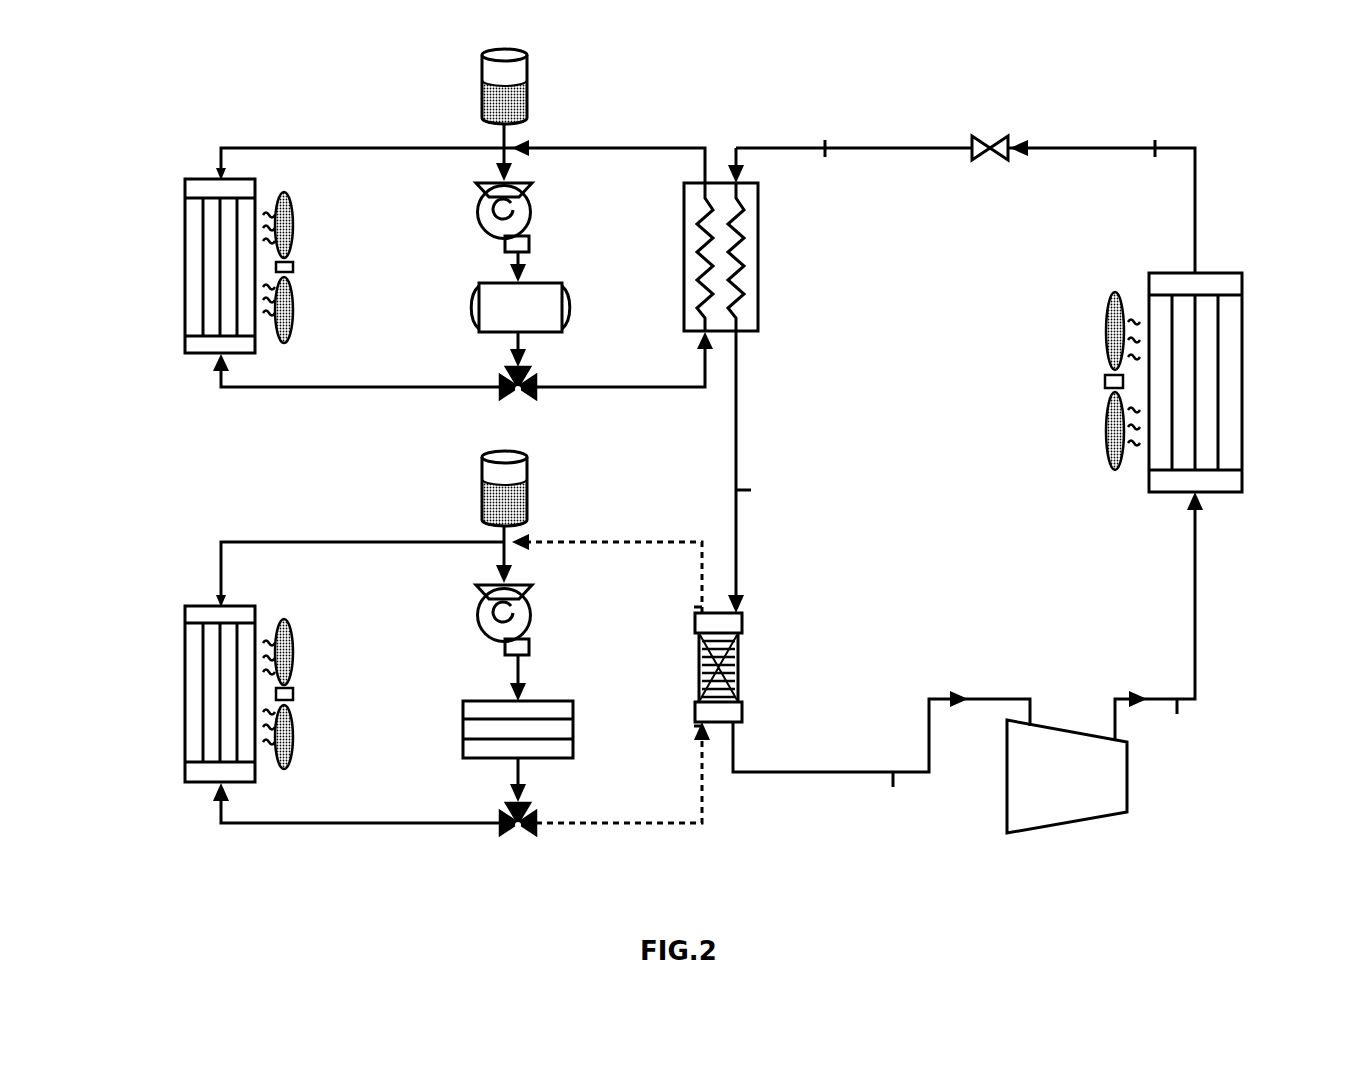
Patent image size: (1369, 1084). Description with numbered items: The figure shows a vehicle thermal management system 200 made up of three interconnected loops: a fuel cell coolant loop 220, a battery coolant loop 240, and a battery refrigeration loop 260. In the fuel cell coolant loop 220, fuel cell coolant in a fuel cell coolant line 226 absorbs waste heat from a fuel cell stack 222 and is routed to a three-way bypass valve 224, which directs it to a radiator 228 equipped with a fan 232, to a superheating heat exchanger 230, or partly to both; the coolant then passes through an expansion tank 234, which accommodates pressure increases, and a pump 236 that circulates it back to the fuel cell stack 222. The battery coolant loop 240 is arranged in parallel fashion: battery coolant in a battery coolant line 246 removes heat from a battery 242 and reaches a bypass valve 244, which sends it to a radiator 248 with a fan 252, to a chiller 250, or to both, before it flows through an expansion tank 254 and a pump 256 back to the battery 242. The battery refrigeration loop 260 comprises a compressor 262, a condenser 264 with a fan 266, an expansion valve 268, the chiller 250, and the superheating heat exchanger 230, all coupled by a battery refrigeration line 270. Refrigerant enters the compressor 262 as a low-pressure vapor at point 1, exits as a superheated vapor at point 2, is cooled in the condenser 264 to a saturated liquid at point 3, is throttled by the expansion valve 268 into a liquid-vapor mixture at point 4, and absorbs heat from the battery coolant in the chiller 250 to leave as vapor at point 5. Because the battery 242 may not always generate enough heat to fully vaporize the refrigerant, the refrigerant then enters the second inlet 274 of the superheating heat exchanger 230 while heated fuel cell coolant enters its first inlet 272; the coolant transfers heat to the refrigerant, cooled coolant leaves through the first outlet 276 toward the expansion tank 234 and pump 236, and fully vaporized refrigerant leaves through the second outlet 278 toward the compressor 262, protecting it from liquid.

The vehicle thermal management system 200 is at (147, 105).
The fuel cell coolant loop 220 is at (260, 542).
The fuel cell stack 222 is at (575, 727).
The bypass valve 224 is at (538, 830).
The fuel cell coolant line 226 is at (365, 824).
The radiator 228 is at (184, 735).
The superheating heat exchanger 230 is at (744, 712).
The fan 232 is at (293, 657).
The expansion tank 234 is at (528, 465).
The pump 236 is at (526, 602).
The battery coolant loop 240 is at (295, 148).
The battery 242 is at (575, 307).
The bypass valve 244 is at (538, 394).
The battery coolant line 246 is at (365, 388).
The radiator 248 is at (184, 305).
The chiller 250 is at (750, 310).
The fan 252 is at (293, 299).
The expansion tank 254 is at (528, 62).
The pump 256 is at (526, 199).
The battery refrigeration loop 260 is at (907, 148).
The compressor 262 is at (1114, 793).
The condenser 264 is at (1243, 410).
The fan 266 is at (1105, 428).
The expansion valve 268 is at (1004, 140).
The battery refrigeration line 270 is at (822, 773).
The first inlet 272 is at (694, 727).
The second inlet 274 is at (744, 614).
The first outlet 276 is at (694, 605).
The second outlet 278 is at (736, 730).
The point 1 is at (894, 793).
The point 2 is at (1178, 721).
The point 3 is at (1155, 133).
The point 4 is at (825, 133).
The point 5 is at (754, 491).